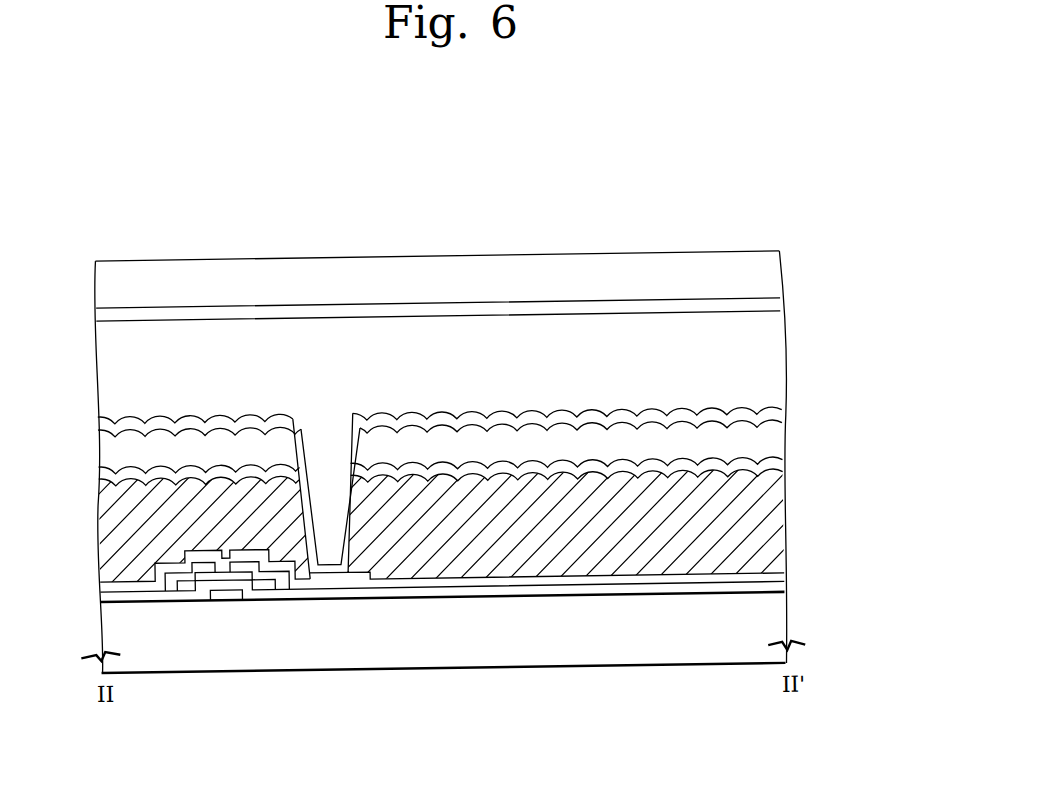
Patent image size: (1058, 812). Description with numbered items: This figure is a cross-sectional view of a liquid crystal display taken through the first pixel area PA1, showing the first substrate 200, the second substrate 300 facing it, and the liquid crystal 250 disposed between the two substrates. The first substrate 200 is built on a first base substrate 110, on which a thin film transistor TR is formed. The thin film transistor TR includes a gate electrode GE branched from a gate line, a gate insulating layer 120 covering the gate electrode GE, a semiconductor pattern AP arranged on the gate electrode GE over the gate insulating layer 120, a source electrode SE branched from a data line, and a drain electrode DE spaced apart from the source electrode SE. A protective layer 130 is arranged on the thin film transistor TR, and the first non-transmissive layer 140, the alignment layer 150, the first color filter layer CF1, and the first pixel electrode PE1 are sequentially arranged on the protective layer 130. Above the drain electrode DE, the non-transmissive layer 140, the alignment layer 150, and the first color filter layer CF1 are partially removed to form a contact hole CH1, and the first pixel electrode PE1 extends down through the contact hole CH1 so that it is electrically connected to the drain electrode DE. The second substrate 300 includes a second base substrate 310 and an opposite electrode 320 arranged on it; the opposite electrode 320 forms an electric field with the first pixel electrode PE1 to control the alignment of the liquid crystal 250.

The first base substrate 110 is at (768, 633).
The gate insulating layer 120 is at (772, 591).
The protective layer 130 is at (770, 581).
The first non-transmissive layer 140 is at (770, 530).
The alignment layer 150 is at (776, 470).
The first substrate 200 is at (860, 406).
The liquid crystal 250 is at (768, 364).
The second substrate 300 is at (857, 268).
The second base substrate 310 is at (768, 276).
The opposite electrode 320 is at (768, 308).
The first pixel electrode PE1 is at (768, 415).
The first color filter layer CF1 is at (768, 440).
The contact hole CH1 is at (330, 428).
The first pixel area PA1 is at (782, 208).
The source electrode SE is at (170, 584).
The gate electrode GE is at (223, 592).
The semiconductor pattern AP is at (258, 582).
The drain electrode DE is at (295, 580).
The thin film transistor TR is at (143, 730).